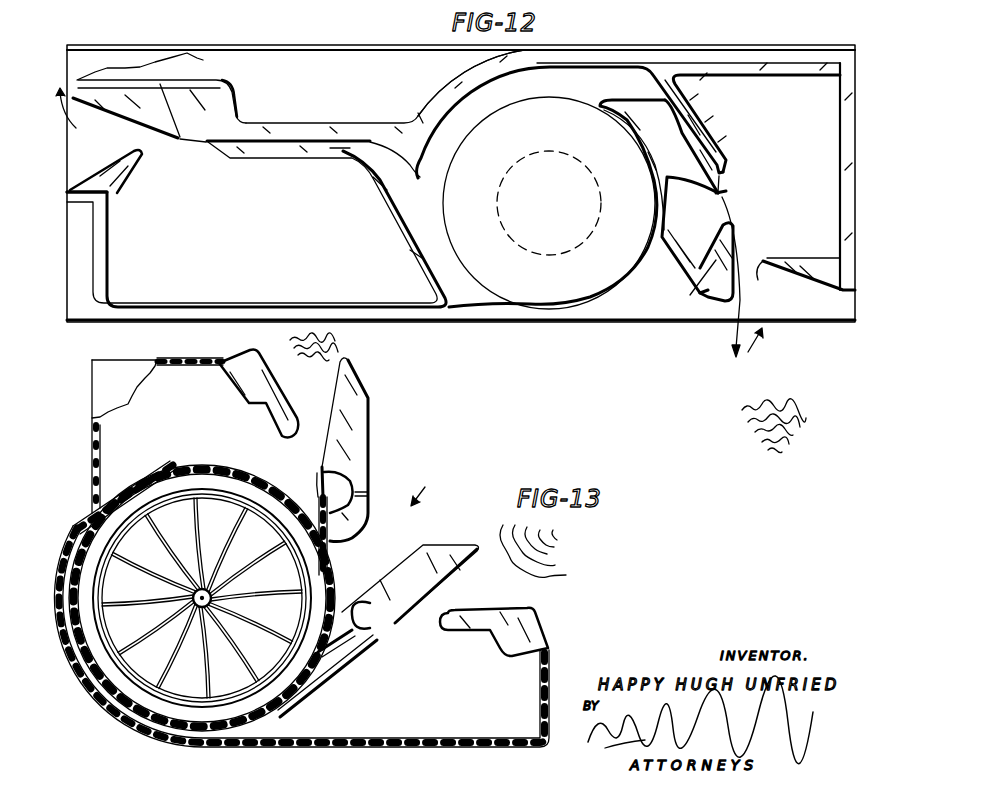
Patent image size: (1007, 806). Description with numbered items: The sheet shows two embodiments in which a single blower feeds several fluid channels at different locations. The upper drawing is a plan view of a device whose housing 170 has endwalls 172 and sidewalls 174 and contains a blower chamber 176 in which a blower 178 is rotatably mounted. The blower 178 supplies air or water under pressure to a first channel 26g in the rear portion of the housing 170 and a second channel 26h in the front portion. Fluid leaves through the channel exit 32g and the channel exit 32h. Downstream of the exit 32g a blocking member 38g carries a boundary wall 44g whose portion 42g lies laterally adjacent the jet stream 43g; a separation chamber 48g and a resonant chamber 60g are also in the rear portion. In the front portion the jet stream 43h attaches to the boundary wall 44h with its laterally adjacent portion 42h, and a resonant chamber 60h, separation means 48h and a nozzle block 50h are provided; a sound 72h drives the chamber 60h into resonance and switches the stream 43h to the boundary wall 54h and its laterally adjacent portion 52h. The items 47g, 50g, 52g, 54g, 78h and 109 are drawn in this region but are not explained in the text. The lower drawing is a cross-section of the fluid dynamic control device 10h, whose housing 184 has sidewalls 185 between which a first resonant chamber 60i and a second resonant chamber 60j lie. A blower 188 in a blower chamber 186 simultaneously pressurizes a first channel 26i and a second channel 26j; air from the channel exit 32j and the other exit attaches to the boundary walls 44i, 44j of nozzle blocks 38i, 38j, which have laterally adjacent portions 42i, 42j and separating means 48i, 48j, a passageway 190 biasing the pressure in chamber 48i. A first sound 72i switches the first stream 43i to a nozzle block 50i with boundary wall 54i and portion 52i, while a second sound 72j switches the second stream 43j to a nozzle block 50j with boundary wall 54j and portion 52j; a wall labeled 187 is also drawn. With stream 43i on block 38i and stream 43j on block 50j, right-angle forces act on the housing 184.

In FIG. 13, the fluid dynamic control device 10h is at (431, 487).
In FIG. 12, the first channel 26g is at (370, 135).
In FIG. 12, the second channel 26h is at (652, 90).
In FIG. 13, the first channel 26i is at (302, 500).
In FIG. 13, the second channel 26j is at (320, 693).
In FIG. 12, the channel exit 32g is at (200, 144).
In FIG. 12, the channel exit 32h is at (727, 191).
In FIG. 13, the channel exit 32j is at (383, 637).
In FIG. 12, the blocking member 38g is at (136, 112).
In FIG. 13, the nozzle block 38i is at (353, 427).
In FIG. 13, the nozzle block 38j is at (418, 586).
In FIG. 12, the laterally adjacent portion 42g is at (183, 136).
In FIG. 12, the laterally adjacent portion 42h is at (722, 230).
In FIG. 13, the laterally adjacent portion 42i is at (320, 466).
In FIG. 13, the laterally adjacent portion 42j is at (400, 620).
In FIG. 12, the jet stream 43g is at (77, 114).
In FIG. 12, the jet stream 43h is at (748, 231).
In FIG. 13, the first stream 43i is at (330, 488).
In FIG. 13, the second stream 43j is at (350, 673).
In FIG. 12, the boundary wall 44g is at (106, 169).
In FIG. 12, the boundary wall 44h is at (737, 258).
In FIG. 13, the boundary wall 44i is at (328, 410).
In FIG. 13, the boundary wall 44j is at (437, 582).
In FIG. 12, the edge 47g is at (178, 140).
In FIG. 12, the separation means or chamber 48g is at (218, 100).
In FIG. 12, the separation means 48h is at (694, 222).
In FIG. 13, the separating means 48i is at (363, 519).
In FIG. 13, the separating means 48j is at (352, 606).
In FIG. 12, the partition wall 50g is at (98, 212).
In FIG. 12, the nozzle block 50h is at (810, 256).
In FIG. 13, the nozzle block 50i is at (232, 391).
In FIG. 13, the nozzle block 50j is at (545, 622).
In FIG. 12, the partition edge 52g is at (150, 156).
In FIG. 12, the laterally adjacent portion 52h is at (758, 272).
In FIG. 13, the laterally adjacent portion 52i is at (282, 437).
In FIG. 13, the laterally adjacent portion 52j is at (438, 631).
In FIG. 12, the flange 54g is at (108, 196).
In FIG. 12, the boundary wall 54h is at (792, 285).
In FIG. 13, the boundary wall 54i is at (250, 355).
In FIG. 13, the boundary wall 54j is at (508, 608).
In FIG. 12, the resonant chamber 60g is at (297, 236).
In FIG. 12, the resonant chamber 60h is at (788, 132).
In FIG. 13, the first resonant chamber 60i is at (188, 431).
In FIG. 13, the second resonant chamber 60j is at (433, 696).
In FIG. 12, the sound 72h is at (812, 412).
In FIG. 13, the first sound 72i is at (340, 355).
In FIG. 13, the second sound 72j is at (568, 559).
In FIG. 12, the baffle 78h is at (692, 283).
In FIG. 12, the direction arrow 109 is at (769, 346).
In FIG. 12, the housing 170 is at (598, 326).
In FIG. 12, the endwalls 172 is at (67, 46).
In FIG. 12, the sidewalls 174 is at (815, 335).
In FIG. 12, the blower chamber 176 is at (580, 82).
In FIG. 12, the blower 178 is at (512, 104).
In FIG. 13, the housing 184 is at (120, 735).
In FIG. 13, the sidewalls 185 is at (170, 360).
In FIG. 13, the blower chamber 186 is at (137, 497).
In FIG. 13, the side wall 187 is at (202, 391).
In FIG. 13, the blower 188 is at (203, 487).
In FIG. 13, the passageway 190 is at (368, 490).